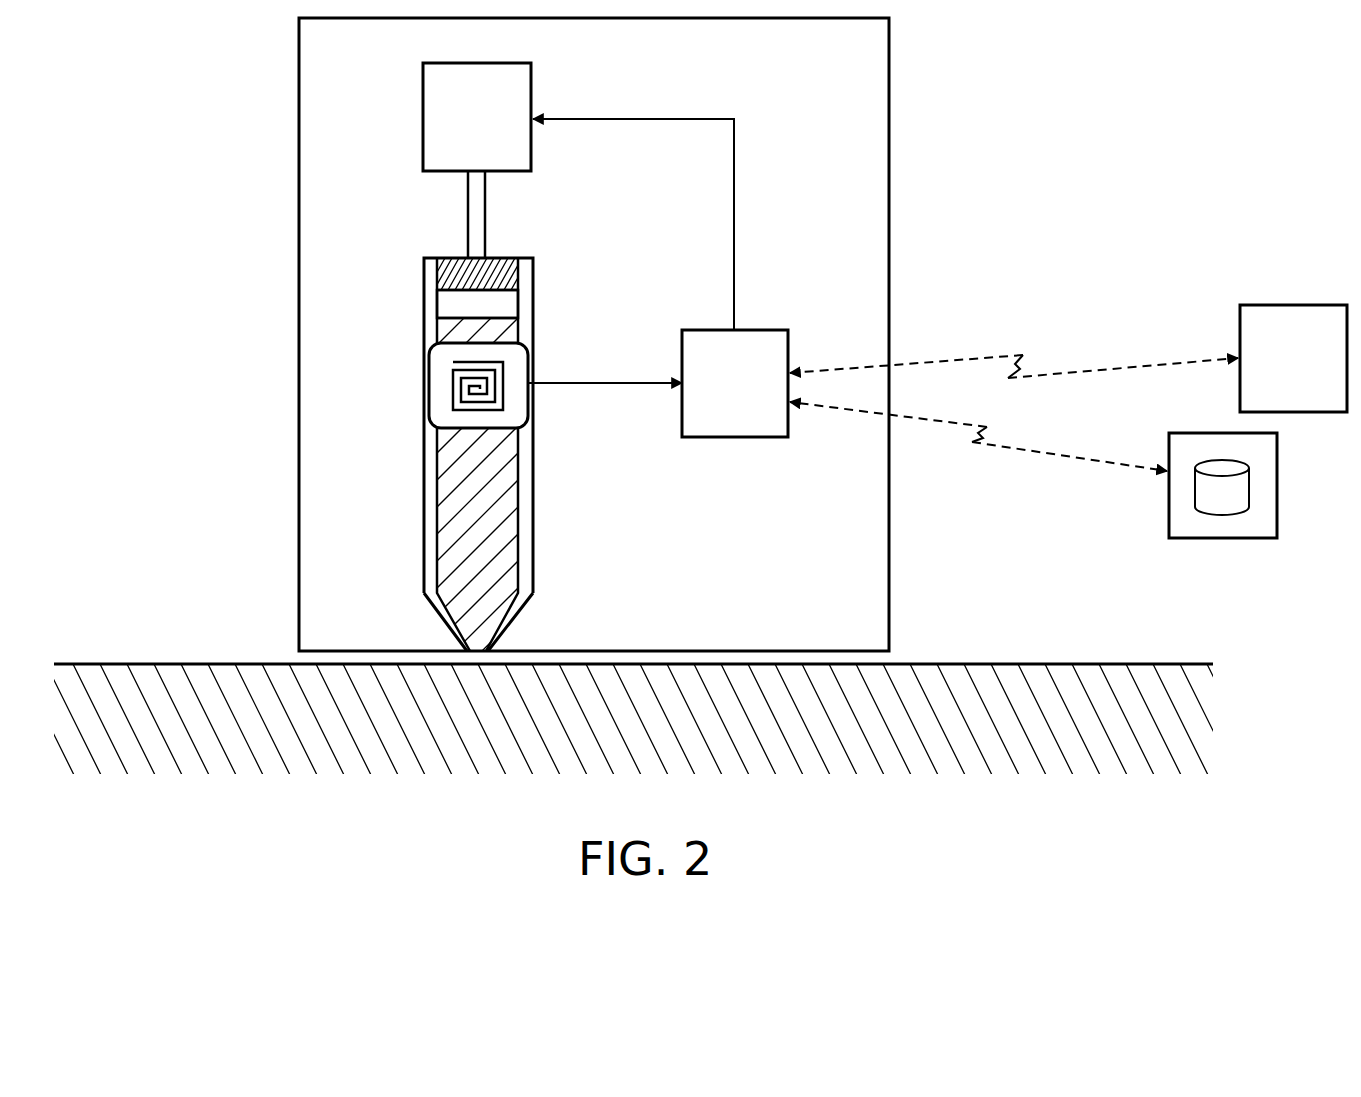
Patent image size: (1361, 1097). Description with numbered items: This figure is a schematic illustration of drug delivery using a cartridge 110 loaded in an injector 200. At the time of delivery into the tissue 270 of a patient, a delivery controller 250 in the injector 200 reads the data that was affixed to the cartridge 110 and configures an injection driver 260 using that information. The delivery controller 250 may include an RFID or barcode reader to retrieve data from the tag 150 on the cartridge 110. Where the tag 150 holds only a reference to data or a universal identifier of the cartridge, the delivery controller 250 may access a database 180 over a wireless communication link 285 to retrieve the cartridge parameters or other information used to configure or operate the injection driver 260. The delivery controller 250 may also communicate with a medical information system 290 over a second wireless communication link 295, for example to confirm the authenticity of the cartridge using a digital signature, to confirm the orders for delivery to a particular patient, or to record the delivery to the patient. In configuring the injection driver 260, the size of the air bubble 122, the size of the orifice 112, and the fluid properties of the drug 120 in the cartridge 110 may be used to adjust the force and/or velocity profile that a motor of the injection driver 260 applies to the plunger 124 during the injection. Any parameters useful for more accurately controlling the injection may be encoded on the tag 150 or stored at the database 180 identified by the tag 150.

The injector 200 is at (893, 572).
The injection driver 260 is at (532, 89).
The delivery controller 250 is at (777, 331).
The cartridge 110 is at (424, 522).
The drug 120 is at (510, 521).
The plunger 124 is at (462, 258).
The air bubble 122 is at (447, 306).
The tag 150 is at (428, 410).
The orifice 112 is at (486, 657).
The tissue 270 is at (597, 765).
The medical information system 290 is at (1292, 305).
The database 180 is at (1198, 540).
The wireless communication link 295 is at (1172, 360).
The wireless communication link 285 is at (1080, 465).